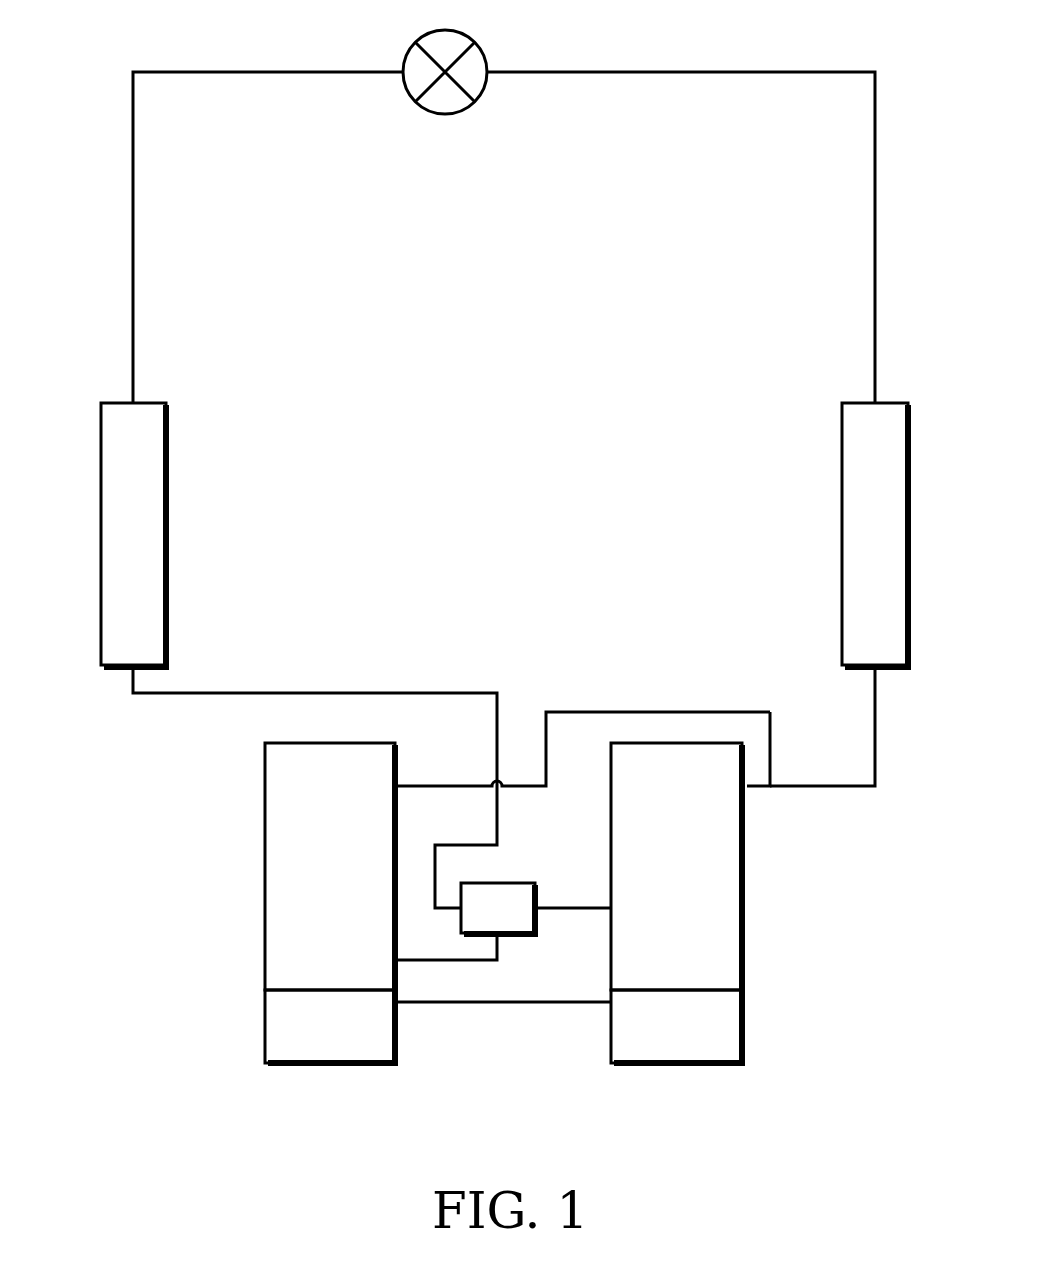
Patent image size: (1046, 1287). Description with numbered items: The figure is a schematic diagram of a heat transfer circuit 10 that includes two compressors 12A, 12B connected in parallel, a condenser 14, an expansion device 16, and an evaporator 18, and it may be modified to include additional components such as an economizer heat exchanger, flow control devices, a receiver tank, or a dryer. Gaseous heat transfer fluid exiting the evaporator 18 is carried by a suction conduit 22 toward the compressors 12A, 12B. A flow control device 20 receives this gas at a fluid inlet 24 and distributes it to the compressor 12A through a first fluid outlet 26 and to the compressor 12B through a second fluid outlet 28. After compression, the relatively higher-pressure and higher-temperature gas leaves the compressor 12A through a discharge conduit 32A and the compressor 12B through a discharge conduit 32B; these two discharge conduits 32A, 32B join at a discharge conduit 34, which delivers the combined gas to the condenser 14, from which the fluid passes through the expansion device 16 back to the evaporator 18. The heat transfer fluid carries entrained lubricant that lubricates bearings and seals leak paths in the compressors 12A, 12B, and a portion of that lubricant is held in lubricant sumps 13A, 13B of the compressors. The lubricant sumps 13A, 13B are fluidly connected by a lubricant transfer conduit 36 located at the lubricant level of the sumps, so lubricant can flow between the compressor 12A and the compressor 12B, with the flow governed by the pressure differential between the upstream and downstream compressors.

The heat transfer circuit 10 is at (114, 52).
The compressor 12A is at (330, 866).
The compressor 12B is at (676, 866).
The lubricant sump 13A is at (330, 1026).
The lubricant sump 13B is at (676, 1026).
The condenser 14 is at (828, 503).
The expansion device 16 is at (494, 107).
The evaporator 18 is at (184, 535).
The flow control device 20 is at (498, 908).
The suction conduit 22 is at (138, 728).
The fluid inlet 24 is at (447, 928).
The first fluid outlet 26 is at (514, 946).
The second fluid outlet 28 is at (570, 894).
The discharge conduit 32A is at (595, 700).
The discharge conduit 32B is at (760, 796).
The discharge conduit 34 is at (888, 749).
The lubricant transfer conduit 36 is at (500, 1018).